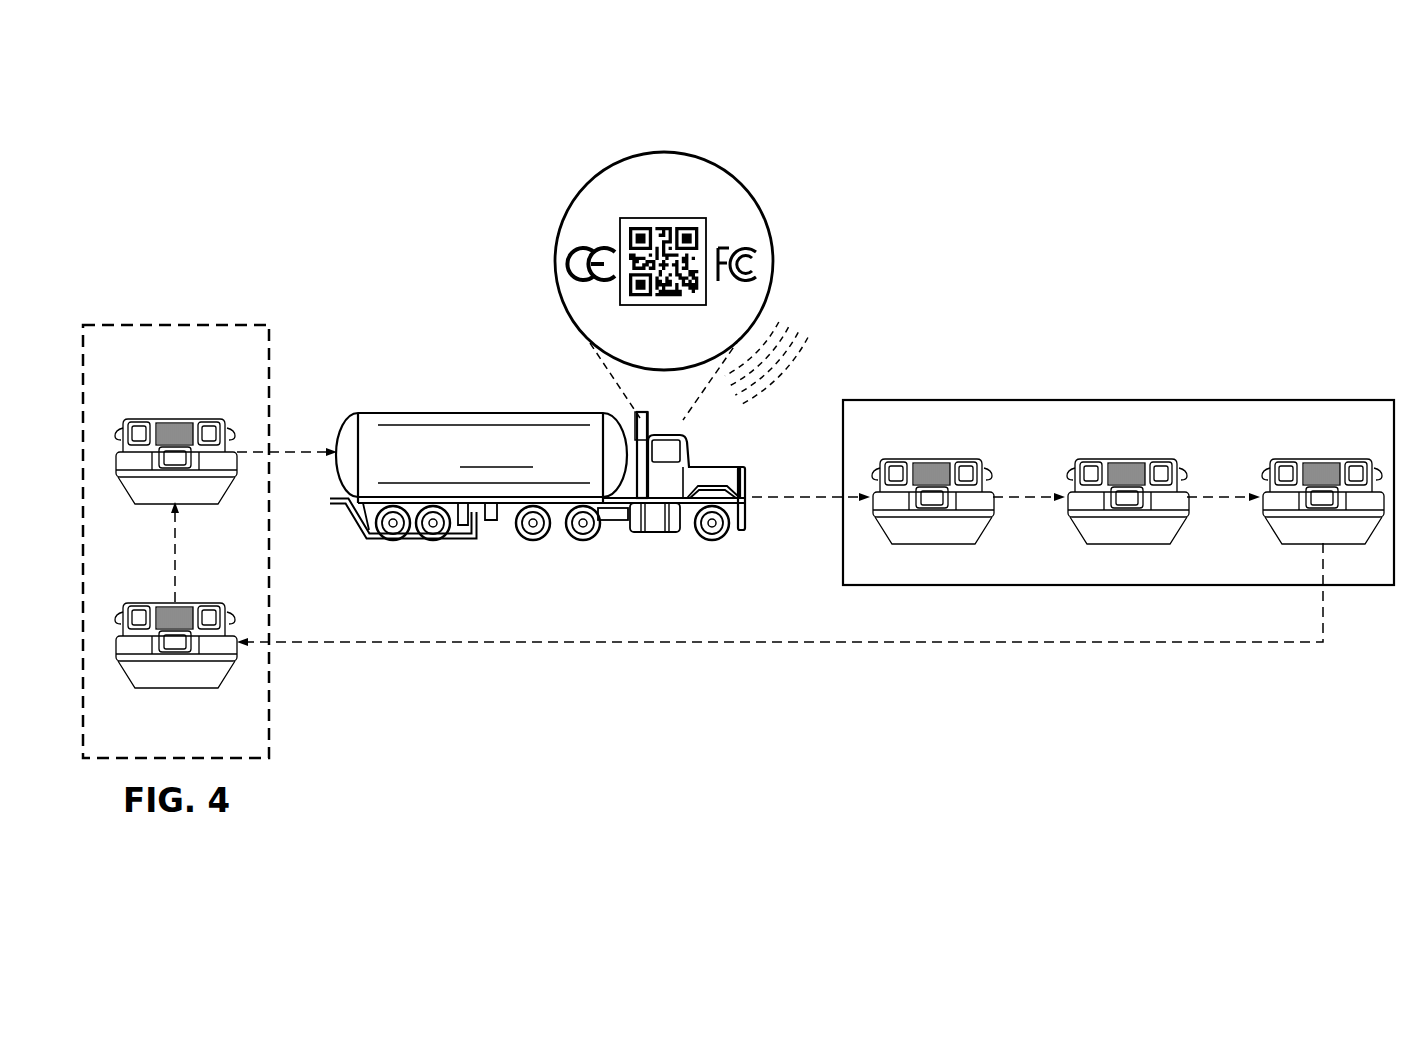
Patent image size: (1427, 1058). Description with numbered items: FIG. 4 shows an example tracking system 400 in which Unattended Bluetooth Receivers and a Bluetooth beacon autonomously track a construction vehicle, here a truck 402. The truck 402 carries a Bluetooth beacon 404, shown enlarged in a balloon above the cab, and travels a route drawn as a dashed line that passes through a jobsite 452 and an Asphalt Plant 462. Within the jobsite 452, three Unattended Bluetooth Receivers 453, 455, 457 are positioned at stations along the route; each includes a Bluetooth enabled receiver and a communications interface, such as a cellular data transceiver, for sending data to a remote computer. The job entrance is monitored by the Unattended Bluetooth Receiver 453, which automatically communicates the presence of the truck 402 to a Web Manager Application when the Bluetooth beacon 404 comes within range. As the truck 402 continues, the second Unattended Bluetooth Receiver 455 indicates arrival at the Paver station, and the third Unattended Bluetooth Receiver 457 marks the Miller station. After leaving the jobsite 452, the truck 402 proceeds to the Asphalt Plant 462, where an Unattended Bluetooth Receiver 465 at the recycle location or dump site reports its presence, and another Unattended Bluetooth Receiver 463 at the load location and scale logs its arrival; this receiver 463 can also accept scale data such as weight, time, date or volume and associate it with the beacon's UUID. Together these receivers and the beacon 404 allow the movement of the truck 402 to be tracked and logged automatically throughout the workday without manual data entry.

The asphalt tracking system 400 is at (398, 146).
The truck 402 is at (746, 507).
The Bluetooth beacon 404 is at (660, 152).
The jobsite 452 is at (1252, 392).
The Unattended Bluetooth Receiver 453 is at (935, 460).
The Unattended Bluetooth Receiver 455 is at (1128, 460).
The Unattended Bluetooth Receiver 457 is at (1322, 460).
The Asphalt Plant 462 is at (104, 320).
The Unattended Bluetooth Receiver 463 is at (160, 503).
The Unattended Bluetooth Receiver 465 is at (212, 602).